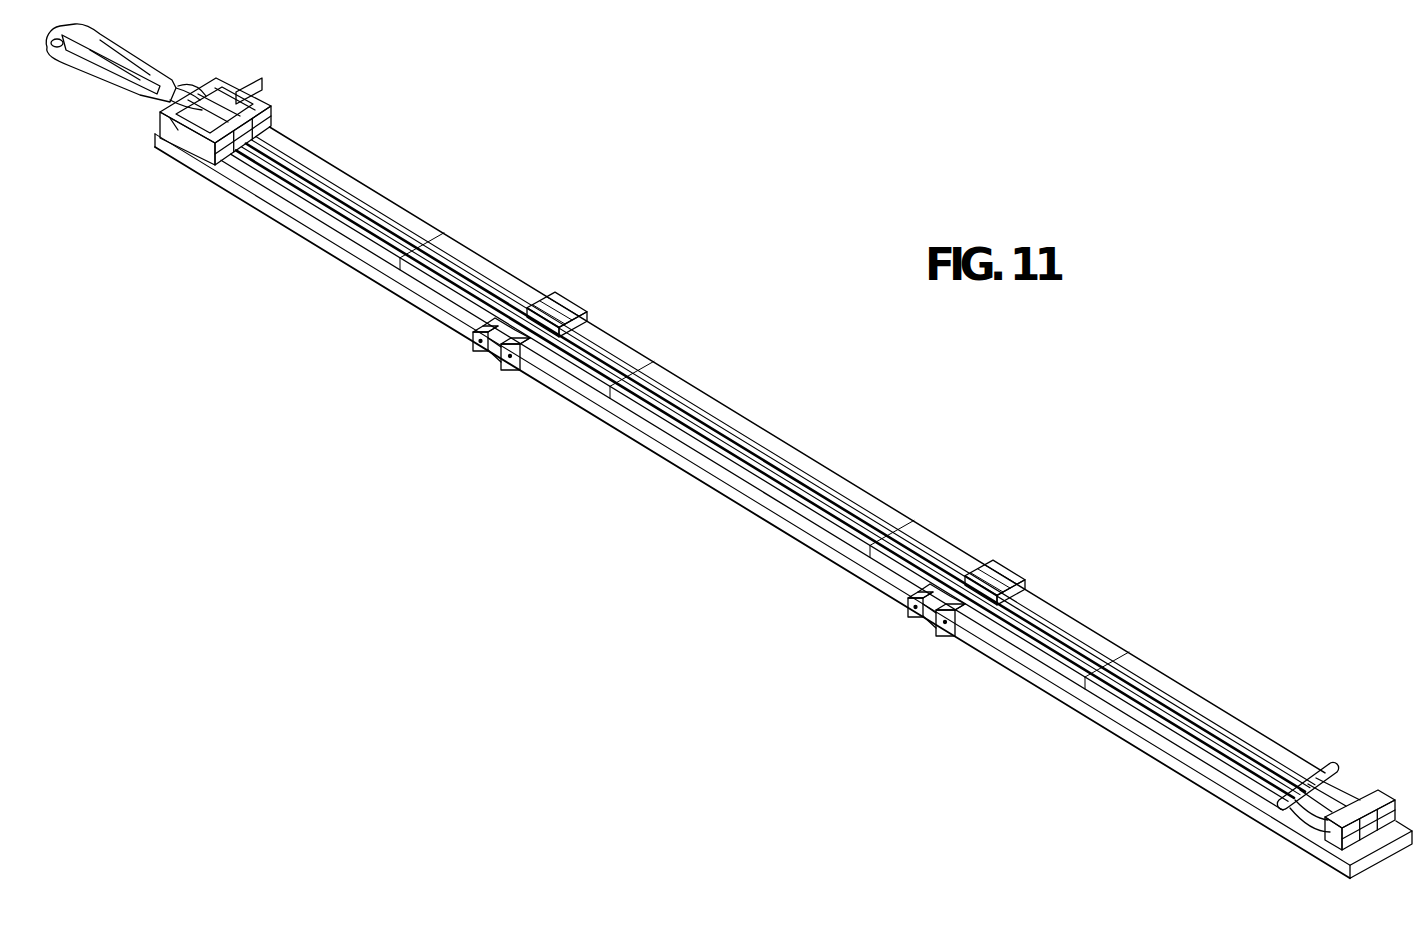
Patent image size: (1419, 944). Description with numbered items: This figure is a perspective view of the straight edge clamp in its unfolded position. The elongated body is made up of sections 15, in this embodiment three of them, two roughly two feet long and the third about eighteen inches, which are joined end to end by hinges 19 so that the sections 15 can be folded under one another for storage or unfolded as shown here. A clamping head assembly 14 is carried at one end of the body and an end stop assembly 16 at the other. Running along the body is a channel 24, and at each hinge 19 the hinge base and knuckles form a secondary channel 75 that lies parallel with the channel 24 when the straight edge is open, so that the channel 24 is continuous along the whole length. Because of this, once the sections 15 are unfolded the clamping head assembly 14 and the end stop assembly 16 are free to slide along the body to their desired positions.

The clamping head assembly 14 is at (262, 86).
The sections 15 is at (432, 203).
The end stop assembly 16 is at (1360, 768).
The hinges 19 is at (489, 355).
The channel 24 is at (833, 496).
The secondary channel 75 is at (561, 305).